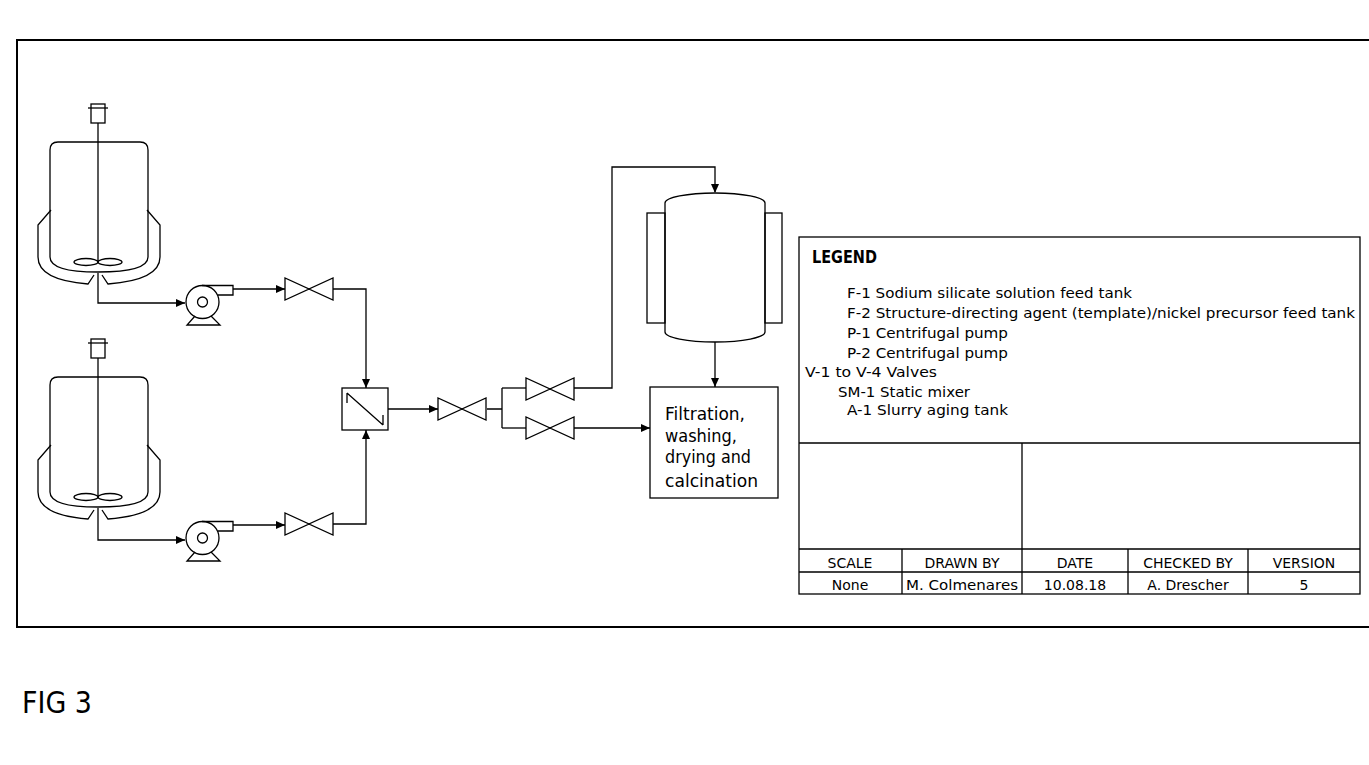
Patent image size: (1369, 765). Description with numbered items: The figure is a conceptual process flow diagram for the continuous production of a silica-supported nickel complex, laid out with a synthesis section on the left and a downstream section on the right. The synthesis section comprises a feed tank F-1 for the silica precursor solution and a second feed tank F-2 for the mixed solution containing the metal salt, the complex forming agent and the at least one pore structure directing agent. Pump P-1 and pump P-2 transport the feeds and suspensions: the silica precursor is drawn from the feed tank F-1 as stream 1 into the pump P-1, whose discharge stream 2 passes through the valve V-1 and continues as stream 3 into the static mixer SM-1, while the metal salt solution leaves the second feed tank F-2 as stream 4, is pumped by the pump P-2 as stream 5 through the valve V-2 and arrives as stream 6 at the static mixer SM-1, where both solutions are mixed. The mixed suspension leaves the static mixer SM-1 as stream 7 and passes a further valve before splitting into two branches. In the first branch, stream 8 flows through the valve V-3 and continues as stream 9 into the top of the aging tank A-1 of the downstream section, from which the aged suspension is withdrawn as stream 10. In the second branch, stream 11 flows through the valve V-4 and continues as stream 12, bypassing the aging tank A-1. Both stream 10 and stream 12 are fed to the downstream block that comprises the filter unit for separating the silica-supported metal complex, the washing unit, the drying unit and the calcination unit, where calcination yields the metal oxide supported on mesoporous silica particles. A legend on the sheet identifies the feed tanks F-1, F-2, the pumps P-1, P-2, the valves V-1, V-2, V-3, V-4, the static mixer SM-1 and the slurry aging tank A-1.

The sodium silicate solution stream from feed tank F-1 to pump P- 1 is at (141, 304).
The pump P-1 discharge stream to valve V-1 2 is at (259, 275).
The sodium silicate stream from valve V-1 to static mixer SM-1 3 is at (366, 338).
The template/nickel precursor stream from feed tank F-2 to pump P-2 4 is at (141, 540).
The pump P-2 discharge stream to valve V-2 5 is at (259, 512).
The template/nickel precursor stream from valve V-2 to static mixer SM-1 6 is at (367, 477).
The mixed slurry stream leaving static mixer SM-1 7 is at (413, 395).
The slurry stream to valve V-3 8 is at (510, 372).
The slurry stream from valve V-3 to aging tank A-1 9 is at (646, 261).
The aged slurry stream from aging tank A-1 to filtration 10 is at (730, 364).
The slurry bypass stream to valve V-4 11 is at (510, 444).
The bypass stream from valve V-4 to filtration 12 is at (612, 442).
The feed tank F-1 is at (99, 194).
The second feed tank F-2 is at (99, 429).
The pump P-1 is at (209, 320).
The pump P-2 is at (209, 554).
The valve V-1 is at (309, 280).
The valve V-2 is at (309, 515).
The valve V-3 is at (550, 380).
The valve V-4 is at (550, 439).
The static mixer SM-1 is at (339, 409).
The aging tank A-1 is at (714, 267).